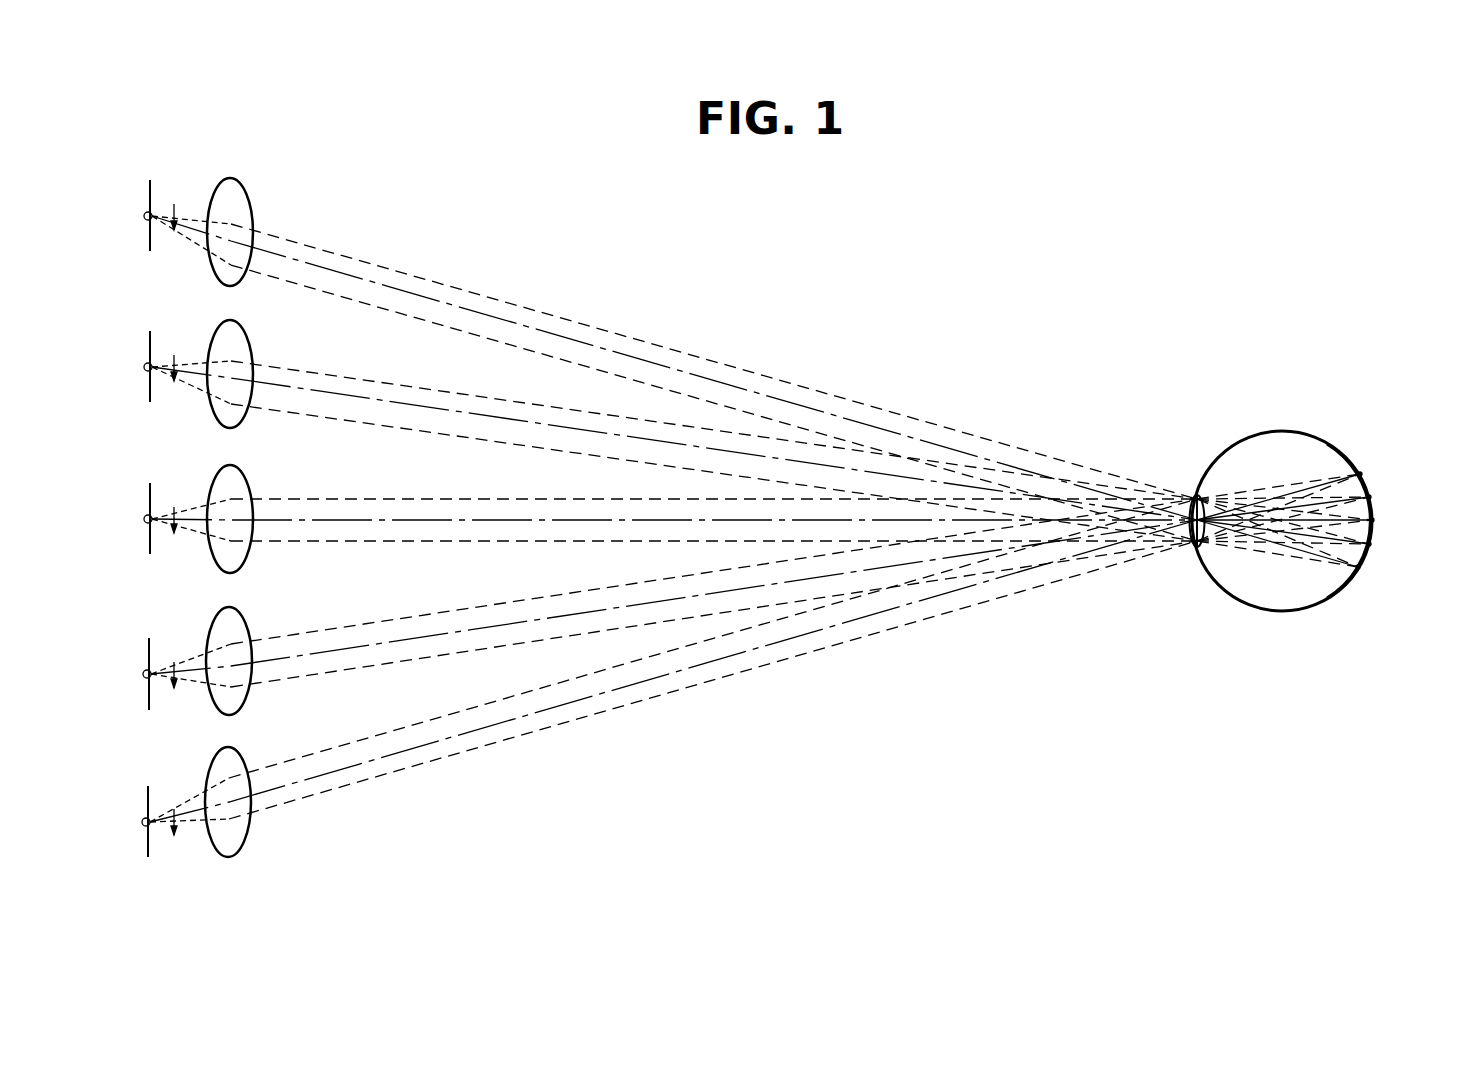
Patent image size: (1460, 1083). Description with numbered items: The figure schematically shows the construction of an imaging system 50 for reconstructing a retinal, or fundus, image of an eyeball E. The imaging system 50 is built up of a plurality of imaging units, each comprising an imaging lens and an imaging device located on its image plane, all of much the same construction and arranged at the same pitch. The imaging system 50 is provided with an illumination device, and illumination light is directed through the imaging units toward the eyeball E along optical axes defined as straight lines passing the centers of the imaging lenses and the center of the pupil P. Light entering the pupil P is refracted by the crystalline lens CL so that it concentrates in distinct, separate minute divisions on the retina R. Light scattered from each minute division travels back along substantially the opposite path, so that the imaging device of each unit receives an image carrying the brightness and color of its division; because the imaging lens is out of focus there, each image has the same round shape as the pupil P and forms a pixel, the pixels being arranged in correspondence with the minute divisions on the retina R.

The eyeball E is at (1268, 399).
The retina R is at (1324, 436).
The crystalline lens CL is at (1186, 487).
The pupil P is at (1175, 563).
The imaging system 50 is at (771, 748).